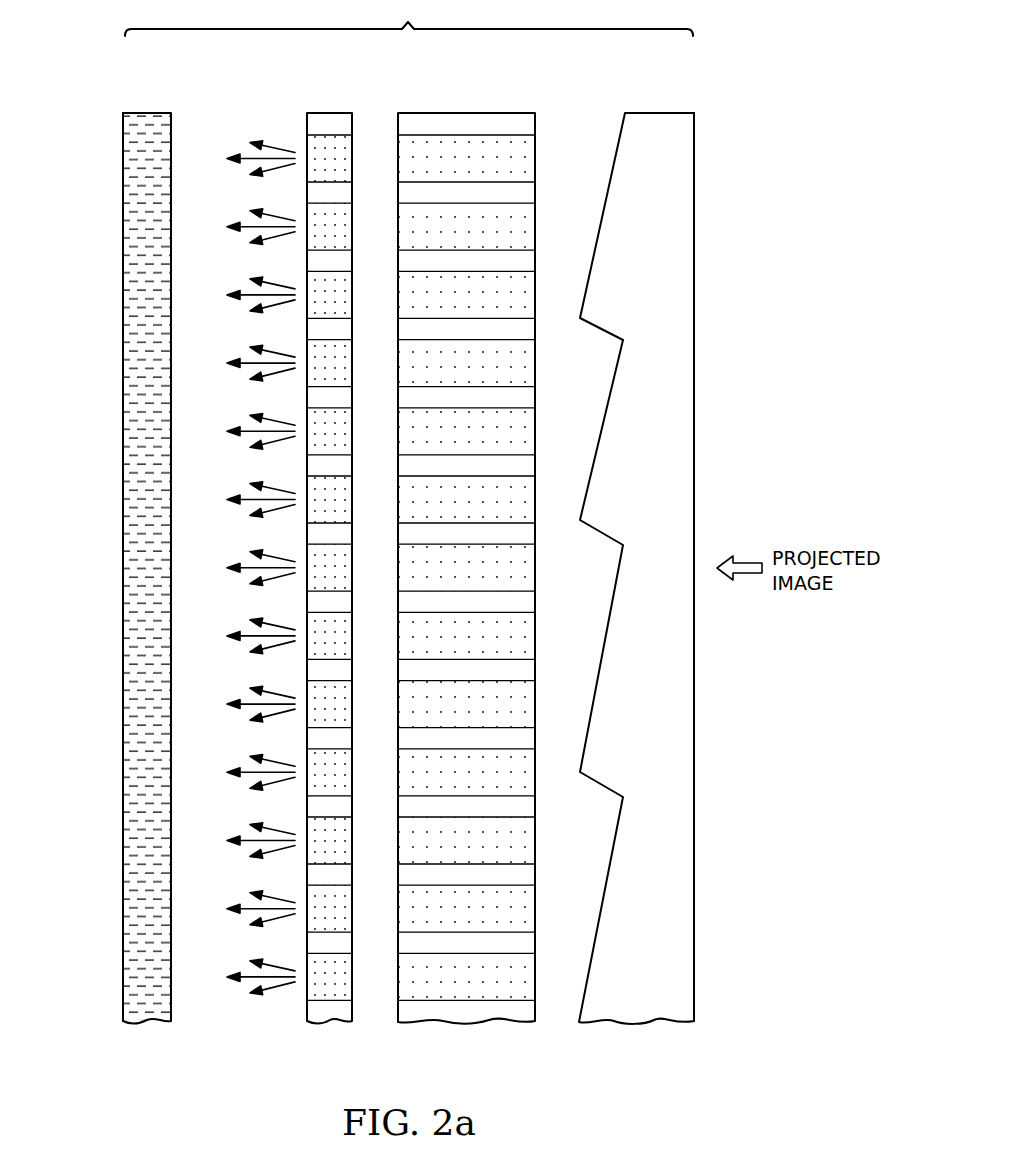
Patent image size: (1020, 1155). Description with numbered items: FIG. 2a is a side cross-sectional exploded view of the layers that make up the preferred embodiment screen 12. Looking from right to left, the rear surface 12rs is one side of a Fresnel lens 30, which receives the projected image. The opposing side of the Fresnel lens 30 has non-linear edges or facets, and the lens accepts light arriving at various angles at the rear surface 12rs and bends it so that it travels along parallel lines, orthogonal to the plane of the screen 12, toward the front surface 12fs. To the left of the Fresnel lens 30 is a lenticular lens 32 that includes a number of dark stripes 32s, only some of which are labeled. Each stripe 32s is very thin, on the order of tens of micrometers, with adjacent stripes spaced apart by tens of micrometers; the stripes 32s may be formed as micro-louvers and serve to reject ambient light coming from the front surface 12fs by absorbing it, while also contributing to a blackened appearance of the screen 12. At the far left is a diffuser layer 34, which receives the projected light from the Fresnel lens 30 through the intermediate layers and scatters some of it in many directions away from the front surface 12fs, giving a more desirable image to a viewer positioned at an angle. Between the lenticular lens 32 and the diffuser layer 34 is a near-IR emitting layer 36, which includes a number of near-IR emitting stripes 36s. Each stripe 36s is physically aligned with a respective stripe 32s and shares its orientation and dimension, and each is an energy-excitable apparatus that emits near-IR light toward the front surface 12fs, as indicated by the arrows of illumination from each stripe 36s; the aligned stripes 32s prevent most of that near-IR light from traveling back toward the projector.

The screen 12 is at (409, 18).
The front surface 12fs is at (123, 130).
The rear surface 12rs is at (695, 135).
The Fresnel lens 30 is at (661, 120).
The lenticular lens 32 is at (465, 104).
The dark stripes 32s is at (527, 157).
The diffuser layer 34 is at (141, 113).
The near-IR emitting layer 36 is at (330, 104).
The near-IR emitting stripes 36s is at (361, 1052).